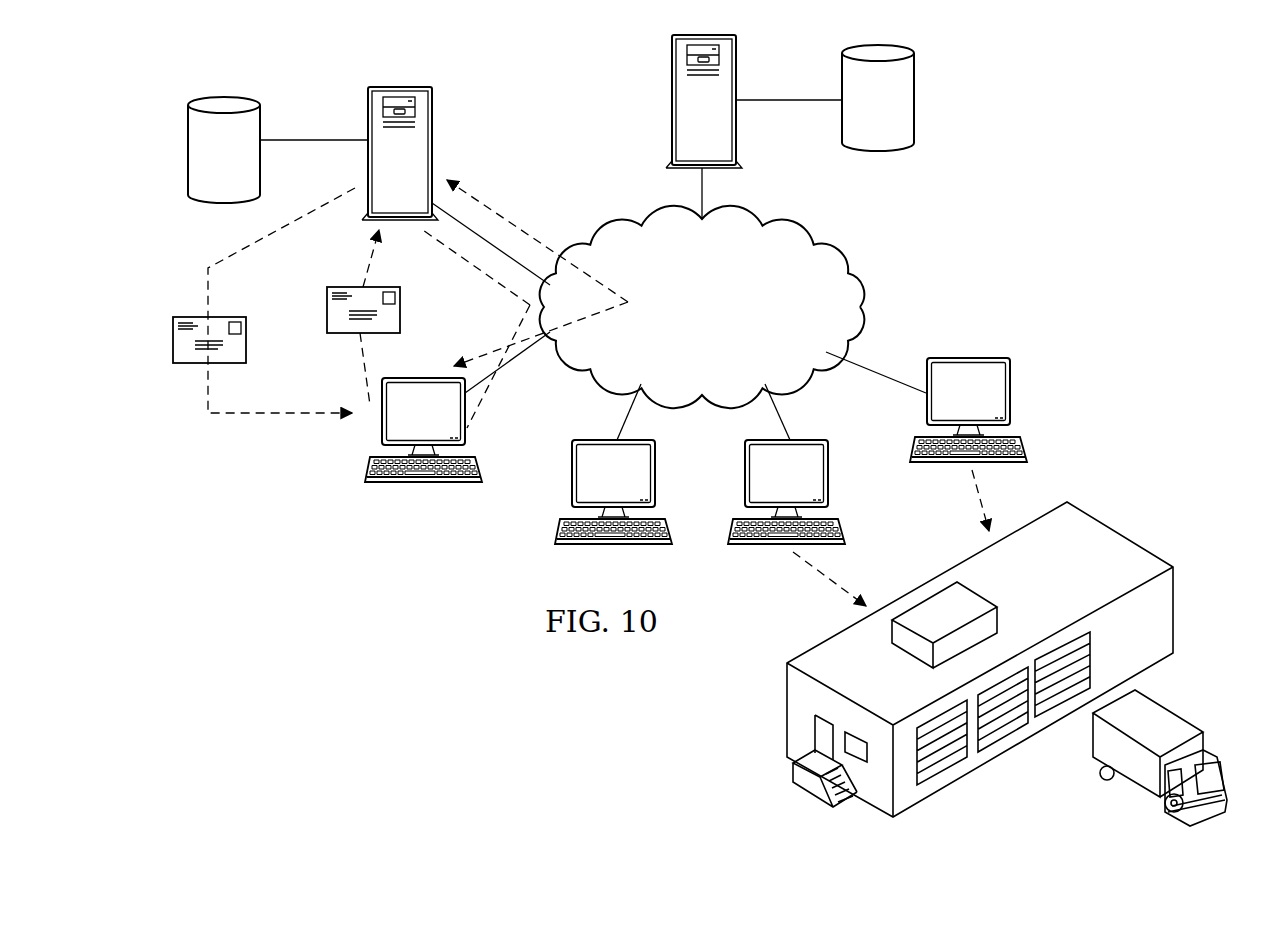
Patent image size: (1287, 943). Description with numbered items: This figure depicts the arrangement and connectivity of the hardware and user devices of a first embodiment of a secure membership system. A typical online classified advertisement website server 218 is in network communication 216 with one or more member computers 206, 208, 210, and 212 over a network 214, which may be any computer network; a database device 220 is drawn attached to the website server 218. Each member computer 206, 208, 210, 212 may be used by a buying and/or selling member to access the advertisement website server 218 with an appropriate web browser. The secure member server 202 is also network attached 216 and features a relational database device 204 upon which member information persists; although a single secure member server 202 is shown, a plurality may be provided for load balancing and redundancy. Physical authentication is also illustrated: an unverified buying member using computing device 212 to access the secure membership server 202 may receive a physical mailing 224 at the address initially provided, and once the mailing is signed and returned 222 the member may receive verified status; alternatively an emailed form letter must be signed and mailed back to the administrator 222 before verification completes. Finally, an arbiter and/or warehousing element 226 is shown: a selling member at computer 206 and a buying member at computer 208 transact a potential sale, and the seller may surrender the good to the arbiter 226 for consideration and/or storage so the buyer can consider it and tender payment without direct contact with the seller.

The secure member server 202 is at (398, 86).
The relational database device 204 is at (188, 136).
The member computer 206 is at (970, 357).
The member computer 208 is at (830, 476).
The member computer 210 is at (572, 478).
The member computer 212 is at (382, 430).
The network 214 is at (810, 248).
The network communication 216 is at (703, 198).
The online classified advertisement website server 218 is at (736, 68).
The database 220 is at (913, 83).
The signed and returned mailing 222 is at (327, 310).
The physical mailing 224 is at (173, 336).
The arbiter and/or warehousing element 226 is at (1186, 684).